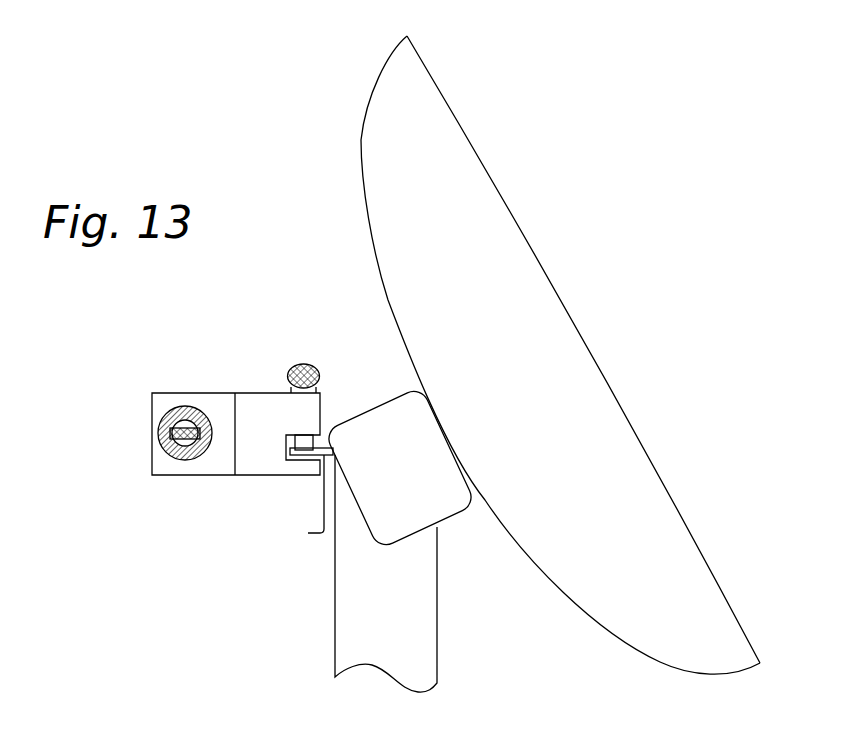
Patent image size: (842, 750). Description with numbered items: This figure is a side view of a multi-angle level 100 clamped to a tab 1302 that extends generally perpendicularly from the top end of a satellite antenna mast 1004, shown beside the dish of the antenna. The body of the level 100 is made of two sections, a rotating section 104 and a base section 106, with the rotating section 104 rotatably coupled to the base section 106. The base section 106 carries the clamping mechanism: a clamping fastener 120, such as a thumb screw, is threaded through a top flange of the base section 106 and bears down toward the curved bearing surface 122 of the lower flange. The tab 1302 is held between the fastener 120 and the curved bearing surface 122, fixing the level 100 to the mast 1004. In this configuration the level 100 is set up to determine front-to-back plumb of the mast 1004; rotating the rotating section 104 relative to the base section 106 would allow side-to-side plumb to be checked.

The multi-angle level 100 is at (142, 371).
The rotating section 104 is at (170, 472).
The base section 106 is at (272, 412).
The clamping fastener 120 is at (296, 365).
The curved bearing surface 122 is at (302, 462).
The tab 1302 is at (293, 495).
The satellite antenna mast 1004 is at (335, 622).